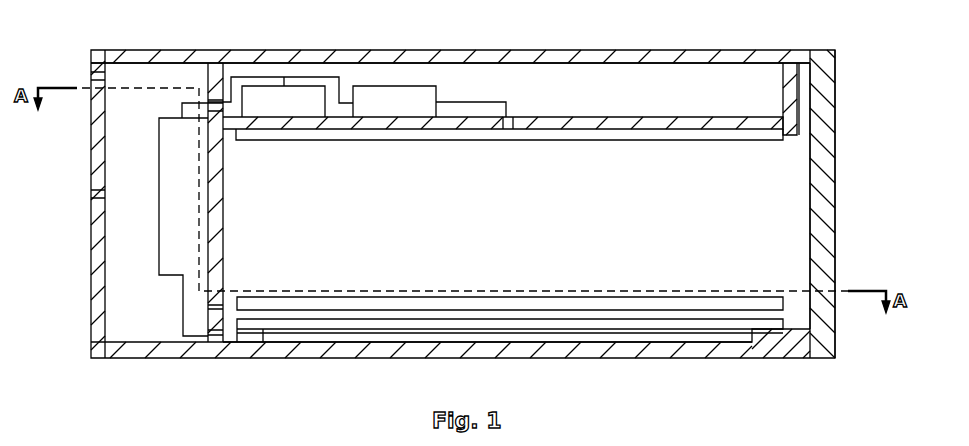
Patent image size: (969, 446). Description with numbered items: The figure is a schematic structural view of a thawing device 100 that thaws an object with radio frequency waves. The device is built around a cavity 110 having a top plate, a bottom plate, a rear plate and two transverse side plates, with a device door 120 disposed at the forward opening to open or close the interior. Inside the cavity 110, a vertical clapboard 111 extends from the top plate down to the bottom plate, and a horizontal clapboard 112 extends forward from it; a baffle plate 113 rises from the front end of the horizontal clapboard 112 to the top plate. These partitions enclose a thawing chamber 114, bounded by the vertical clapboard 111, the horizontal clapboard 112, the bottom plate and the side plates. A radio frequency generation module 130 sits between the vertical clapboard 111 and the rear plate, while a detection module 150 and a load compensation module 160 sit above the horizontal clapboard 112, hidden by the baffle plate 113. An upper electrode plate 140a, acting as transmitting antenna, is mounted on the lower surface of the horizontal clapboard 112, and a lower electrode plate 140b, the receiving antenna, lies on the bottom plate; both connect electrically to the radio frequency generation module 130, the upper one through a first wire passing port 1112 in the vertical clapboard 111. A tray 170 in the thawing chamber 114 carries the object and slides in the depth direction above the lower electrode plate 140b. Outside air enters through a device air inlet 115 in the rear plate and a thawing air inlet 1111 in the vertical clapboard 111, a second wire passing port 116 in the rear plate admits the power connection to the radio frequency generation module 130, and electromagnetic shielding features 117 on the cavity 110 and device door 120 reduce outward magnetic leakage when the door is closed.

The thawing device 100 is at (110, 29).
The cavity 110 is at (457, 60).
The vertical clapboard 111 is at (217, 185).
The thawing air inlet 1111 is at (210, 293).
The first wire passing port 1112 is at (213, 100).
The horizontal clapboard 112 is at (532, 123).
The baffle plate 113 is at (790, 72).
The thawing chamber 114 is at (800, 220).
The device air inlet 115 is at (102, 88).
The second wire passing port 116 is at (100, 198).
The electromagnetic shielding feature 117 is at (562, 60).
The device door 120 is at (812, 242).
The radio frequency generation module 130 is at (183, 230).
The upper electrode plate 140a is at (590, 130).
The lower electrode plate 140b is at (630, 322).
The detection module 150 is at (300, 93).
The load compensation module 160 is at (397, 97).
The tray 170 is at (530, 300).